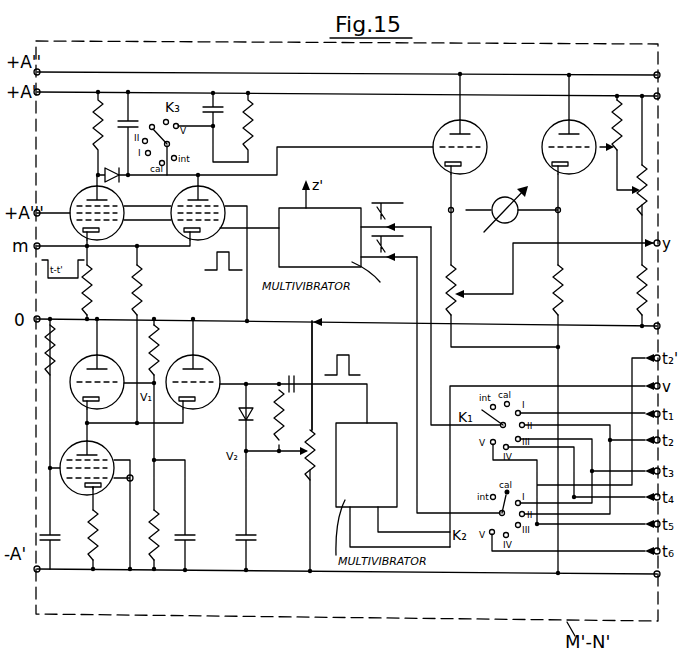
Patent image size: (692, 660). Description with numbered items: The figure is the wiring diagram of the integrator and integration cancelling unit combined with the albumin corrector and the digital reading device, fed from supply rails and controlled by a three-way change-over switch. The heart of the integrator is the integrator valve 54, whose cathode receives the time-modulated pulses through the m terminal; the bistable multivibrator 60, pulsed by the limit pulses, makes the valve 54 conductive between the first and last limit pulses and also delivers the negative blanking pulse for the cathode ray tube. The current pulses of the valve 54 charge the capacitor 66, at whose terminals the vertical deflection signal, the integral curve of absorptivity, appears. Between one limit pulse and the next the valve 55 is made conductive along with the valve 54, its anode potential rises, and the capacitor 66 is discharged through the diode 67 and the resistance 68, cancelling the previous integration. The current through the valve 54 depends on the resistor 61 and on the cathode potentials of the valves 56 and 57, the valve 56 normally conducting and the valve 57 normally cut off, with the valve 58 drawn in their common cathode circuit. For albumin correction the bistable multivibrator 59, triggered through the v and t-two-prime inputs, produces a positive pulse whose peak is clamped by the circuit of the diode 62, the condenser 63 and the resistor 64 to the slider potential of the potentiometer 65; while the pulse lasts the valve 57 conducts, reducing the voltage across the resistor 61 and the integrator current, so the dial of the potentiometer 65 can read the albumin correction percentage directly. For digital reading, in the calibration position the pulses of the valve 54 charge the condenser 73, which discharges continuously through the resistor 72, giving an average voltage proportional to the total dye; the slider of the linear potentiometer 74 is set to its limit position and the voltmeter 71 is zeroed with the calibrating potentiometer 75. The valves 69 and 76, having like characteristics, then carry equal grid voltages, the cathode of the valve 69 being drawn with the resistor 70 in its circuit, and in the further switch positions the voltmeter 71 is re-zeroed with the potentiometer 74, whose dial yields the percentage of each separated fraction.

The integrator valve 54 is at (214, 192).
The valve 55 is at (88, 196).
The valve 56 is at (118, 362).
The valve 57 is at (212, 362).
The valve 58 is at (110, 458).
The bistable multivibrator 59 is at (383, 414).
The bistable multivibrator 60 is at (345, 203).
The resistor 61 is at (150, 290).
The diode 62 is at (242, 420).
The condenser 63 is at (278, 377).
The resistor 64 is at (290, 415).
The potentiometer 65 is at (296, 400).
The capacitor 66 is at (125, 133).
The diode 67 is at (113, 163).
The resistance 68 is at (84, 133).
The valve 69 is at (476, 134).
The resistor 70 is at (463, 292).
The voltmeter 71 is at (506, 205).
The resistor 72 is at (262, 127).
The condenser 73 is at (221, 114).
The linear potentiometer 74 is at (628, 127).
The calibrating potentiometer 75 is at (600, 240).
The valve 76 is at (584, 134).